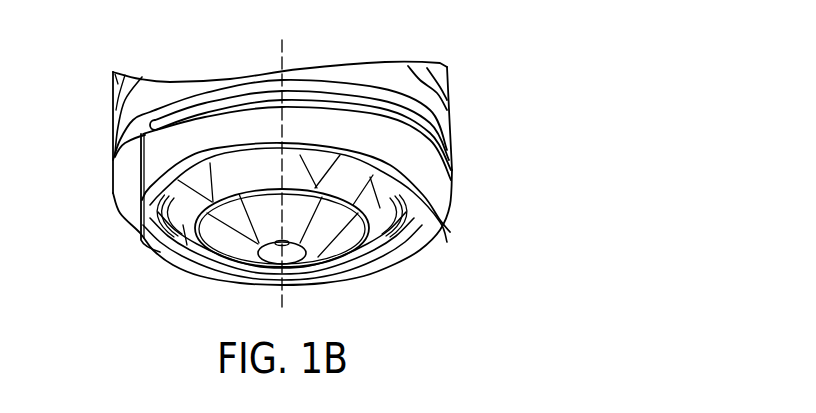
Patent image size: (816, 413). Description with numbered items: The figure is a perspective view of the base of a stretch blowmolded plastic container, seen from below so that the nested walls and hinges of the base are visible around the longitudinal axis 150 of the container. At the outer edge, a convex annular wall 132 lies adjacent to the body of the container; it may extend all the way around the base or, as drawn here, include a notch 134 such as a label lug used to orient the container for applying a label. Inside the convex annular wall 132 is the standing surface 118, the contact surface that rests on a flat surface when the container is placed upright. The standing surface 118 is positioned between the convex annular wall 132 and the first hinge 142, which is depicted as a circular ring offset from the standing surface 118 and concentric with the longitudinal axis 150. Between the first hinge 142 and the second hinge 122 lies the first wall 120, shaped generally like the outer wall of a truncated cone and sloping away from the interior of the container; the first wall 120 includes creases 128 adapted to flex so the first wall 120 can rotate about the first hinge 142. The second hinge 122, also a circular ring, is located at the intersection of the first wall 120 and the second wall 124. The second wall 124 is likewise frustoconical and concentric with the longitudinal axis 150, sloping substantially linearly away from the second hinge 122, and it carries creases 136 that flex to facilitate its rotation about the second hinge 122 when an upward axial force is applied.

The longitudinal axis 150 is at (279, 42).
The convex annular wall 132 is at (417, 162).
The first wall 120 is at (437, 198).
The standing surface 118 is at (420, 220).
The notch 134 is at (126, 192).
The first hinge 142 is at (154, 250).
The second wall 124 is at (183, 240).
The creases 136 is at (238, 240).
The second hinge 122 is at (375, 247).
The creases 128 is at (380, 208).